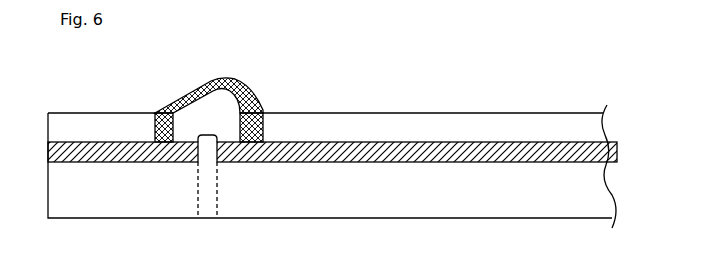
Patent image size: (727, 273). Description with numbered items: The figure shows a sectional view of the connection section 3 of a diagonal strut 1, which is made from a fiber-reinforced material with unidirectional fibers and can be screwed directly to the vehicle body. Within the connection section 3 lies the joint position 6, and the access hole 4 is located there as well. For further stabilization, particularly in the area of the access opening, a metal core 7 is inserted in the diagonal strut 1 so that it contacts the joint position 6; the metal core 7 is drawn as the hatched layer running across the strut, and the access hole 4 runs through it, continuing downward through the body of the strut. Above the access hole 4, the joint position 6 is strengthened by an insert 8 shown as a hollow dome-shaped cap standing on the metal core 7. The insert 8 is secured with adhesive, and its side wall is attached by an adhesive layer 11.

The diagonal strut 1 is at (434, 105).
The connection section 3 is at (106, 124).
The access hole 4 is at (220, 198).
The joint position 6 is at (191, 167).
The metal core 7 is at (338, 143).
The insert 8 is at (233, 80).
The adhesive layer 11 is at (269, 93).